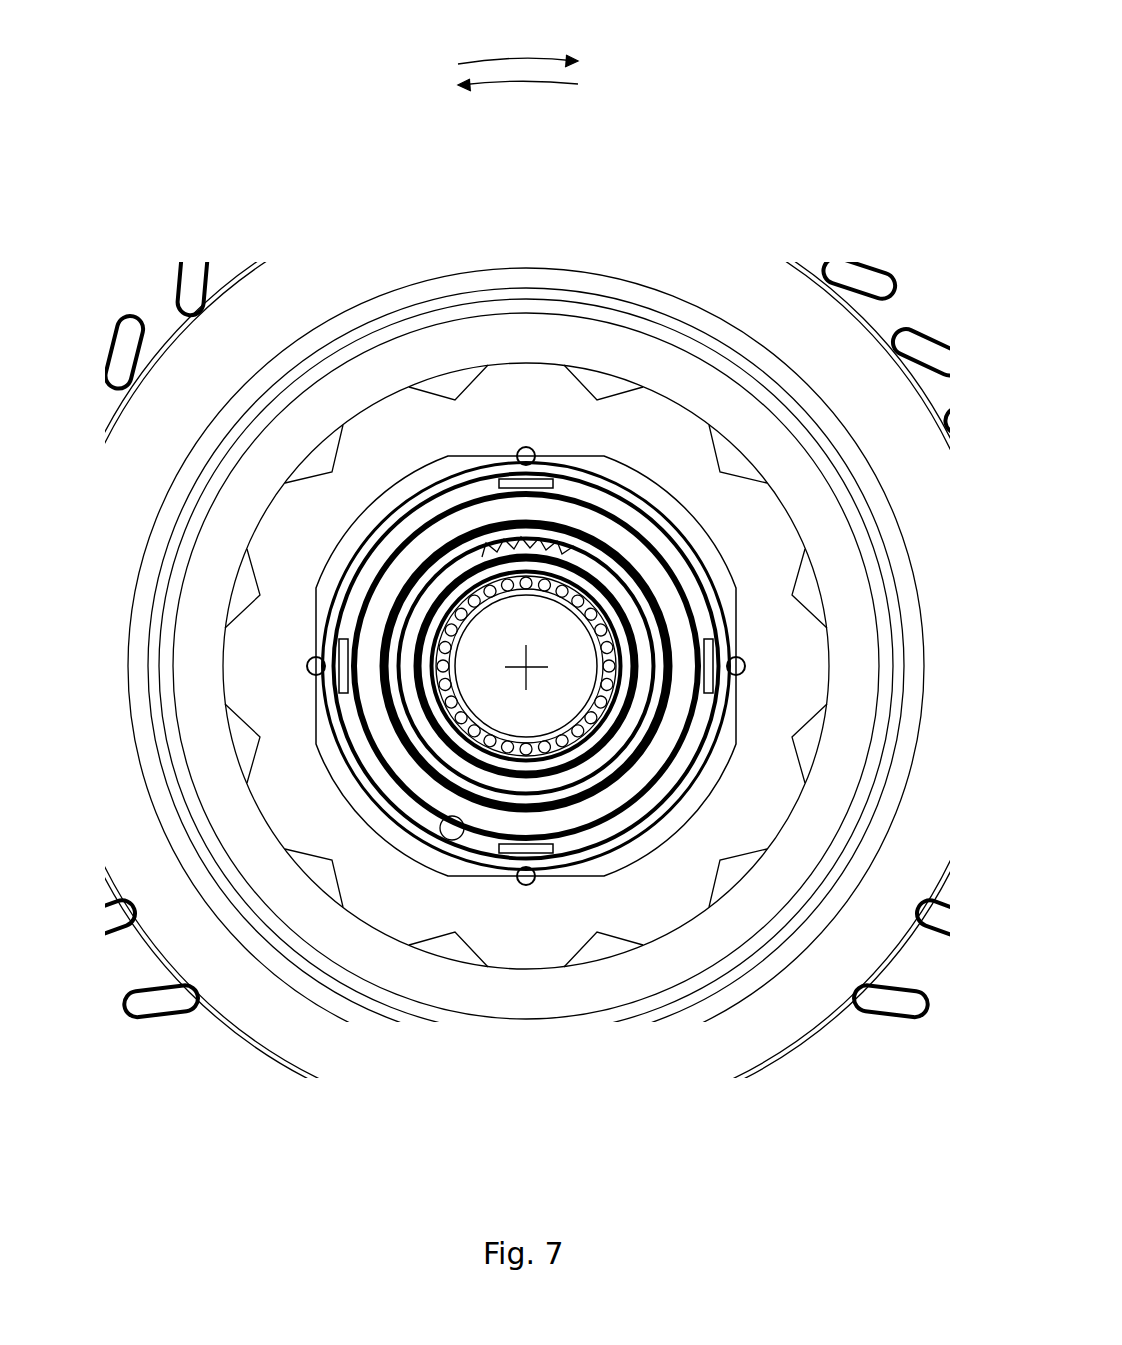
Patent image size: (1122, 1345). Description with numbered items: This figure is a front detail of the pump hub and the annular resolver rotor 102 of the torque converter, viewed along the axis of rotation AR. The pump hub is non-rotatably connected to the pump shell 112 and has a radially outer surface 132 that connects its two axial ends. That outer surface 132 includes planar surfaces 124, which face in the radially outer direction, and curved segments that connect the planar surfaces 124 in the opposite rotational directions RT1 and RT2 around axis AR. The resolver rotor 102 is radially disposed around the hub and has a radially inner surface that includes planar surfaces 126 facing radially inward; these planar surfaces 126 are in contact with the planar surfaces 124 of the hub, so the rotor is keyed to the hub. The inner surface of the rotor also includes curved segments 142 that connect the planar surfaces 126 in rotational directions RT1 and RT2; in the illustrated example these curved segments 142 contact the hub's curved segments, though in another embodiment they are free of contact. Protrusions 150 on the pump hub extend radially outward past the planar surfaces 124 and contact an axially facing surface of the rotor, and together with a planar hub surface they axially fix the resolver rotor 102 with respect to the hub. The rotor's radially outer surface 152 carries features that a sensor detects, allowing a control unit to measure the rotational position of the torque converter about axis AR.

The resolver rotor 102 is at (513, 360).
The pump shell 112 is at (760, 266).
The planar surfaces 124 is at (433, 492).
The planar surfaces 126 is at (565, 463).
The radially outer surface 132 is at (468, 832).
The curved segments 142 is at (403, 850).
The protrusions 150 is at (320, 668).
The radially outer surface 152 is at (655, 395).
The axis of rotation AR is at (530, 672).
The rotational direction RT1 is at (526, 58).
The rotational direction RT2 is at (553, 84).